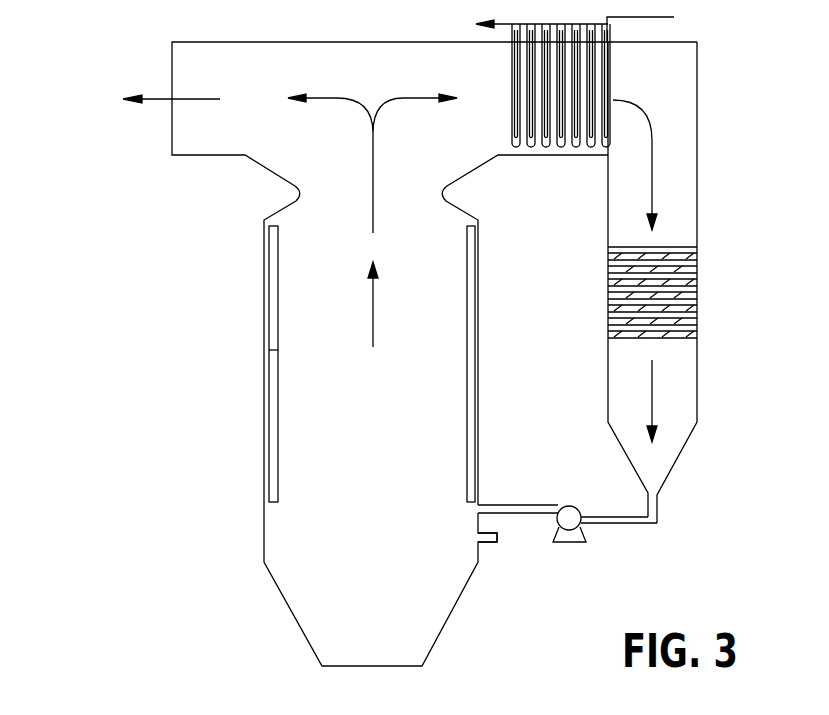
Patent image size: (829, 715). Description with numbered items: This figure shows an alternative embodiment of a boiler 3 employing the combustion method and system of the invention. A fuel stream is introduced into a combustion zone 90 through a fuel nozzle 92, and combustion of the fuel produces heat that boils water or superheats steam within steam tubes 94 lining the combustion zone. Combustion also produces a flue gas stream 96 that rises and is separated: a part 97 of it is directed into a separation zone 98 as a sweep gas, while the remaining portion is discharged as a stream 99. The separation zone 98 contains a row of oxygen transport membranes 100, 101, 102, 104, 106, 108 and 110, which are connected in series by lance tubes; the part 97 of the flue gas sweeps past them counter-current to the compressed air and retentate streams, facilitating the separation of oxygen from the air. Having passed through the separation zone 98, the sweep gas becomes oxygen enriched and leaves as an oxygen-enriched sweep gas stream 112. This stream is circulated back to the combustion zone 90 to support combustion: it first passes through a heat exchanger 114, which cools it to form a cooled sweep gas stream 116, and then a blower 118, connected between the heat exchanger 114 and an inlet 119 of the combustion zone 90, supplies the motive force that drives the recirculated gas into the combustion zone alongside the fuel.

The boiler 3 is at (160, 383).
The combustion zone 90 is at (381, 543).
The fuel nozzle 92 is at (484, 542).
The steam tubes 94 is at (269, 298).
The flue gas stream 96 is at (373, 325).
The part of flue gas stream 97 is at (428, 99).
The separation zone 98 is at (567, 75).
The discharged flue gas stream 99 is at (190, 99).
The oxygen transport membrane 100 is at (604, 148).
The oxygen transport membrane 101 is at (588, 148).
The oxygen transport membrane 102 is at (573, 148).
The oxygen transport membrane 104 is at (557, 148).
The oxygen transport membrane 106 is at (543, 73).
The oxygen transport membrane 108 is at (527, 98).
The oxygen transport membrane 110 is at (513, 135).
The oxygen-enriched sweep gas stream 112 is at (652, 168).
The heat exchanger 114 is at (697, 293).
The cooled sweep gas stream 116 is at (652, 390).
The blower 118 is at (570, 541).
The inlet 119 is at (500, 505).